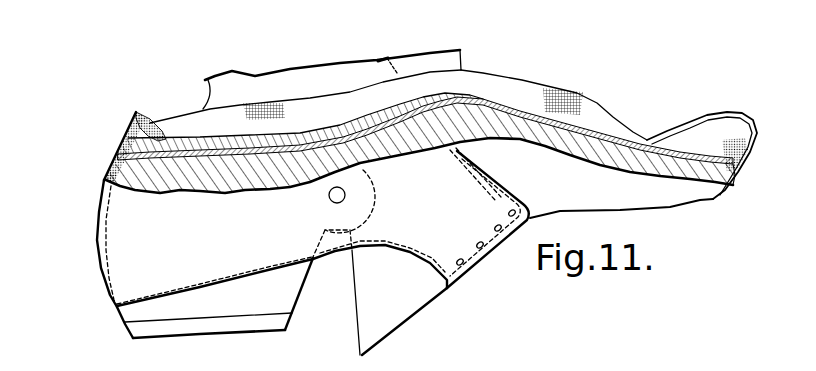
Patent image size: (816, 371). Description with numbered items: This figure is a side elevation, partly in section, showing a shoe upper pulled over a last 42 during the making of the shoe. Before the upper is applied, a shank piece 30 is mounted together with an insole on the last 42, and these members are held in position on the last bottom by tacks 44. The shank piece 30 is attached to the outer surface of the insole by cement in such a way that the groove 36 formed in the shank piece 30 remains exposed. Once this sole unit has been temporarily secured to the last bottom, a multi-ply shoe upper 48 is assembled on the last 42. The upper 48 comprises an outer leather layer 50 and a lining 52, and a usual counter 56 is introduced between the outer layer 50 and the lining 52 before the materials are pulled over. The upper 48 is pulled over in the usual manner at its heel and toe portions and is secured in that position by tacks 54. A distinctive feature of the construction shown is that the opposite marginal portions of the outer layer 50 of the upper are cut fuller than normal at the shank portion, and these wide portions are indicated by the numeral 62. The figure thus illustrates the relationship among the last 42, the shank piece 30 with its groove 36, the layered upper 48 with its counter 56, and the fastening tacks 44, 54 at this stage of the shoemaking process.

The shank piece 30 is at (207, 141).
The groove 36 is at (285, 138).
The last 42 is at (278, 297).
The tacks 44 is at (183, 156).
The multi-ply shoe upper 48 is at (113, 262).
The outer leather layer 50 is at (123, 153).
The lining 52 is at (133, 185).
The tacks 54 is at (143, 130).
The counter 56 is at (103, 181).
The wide portions 62 is at (308, 80).